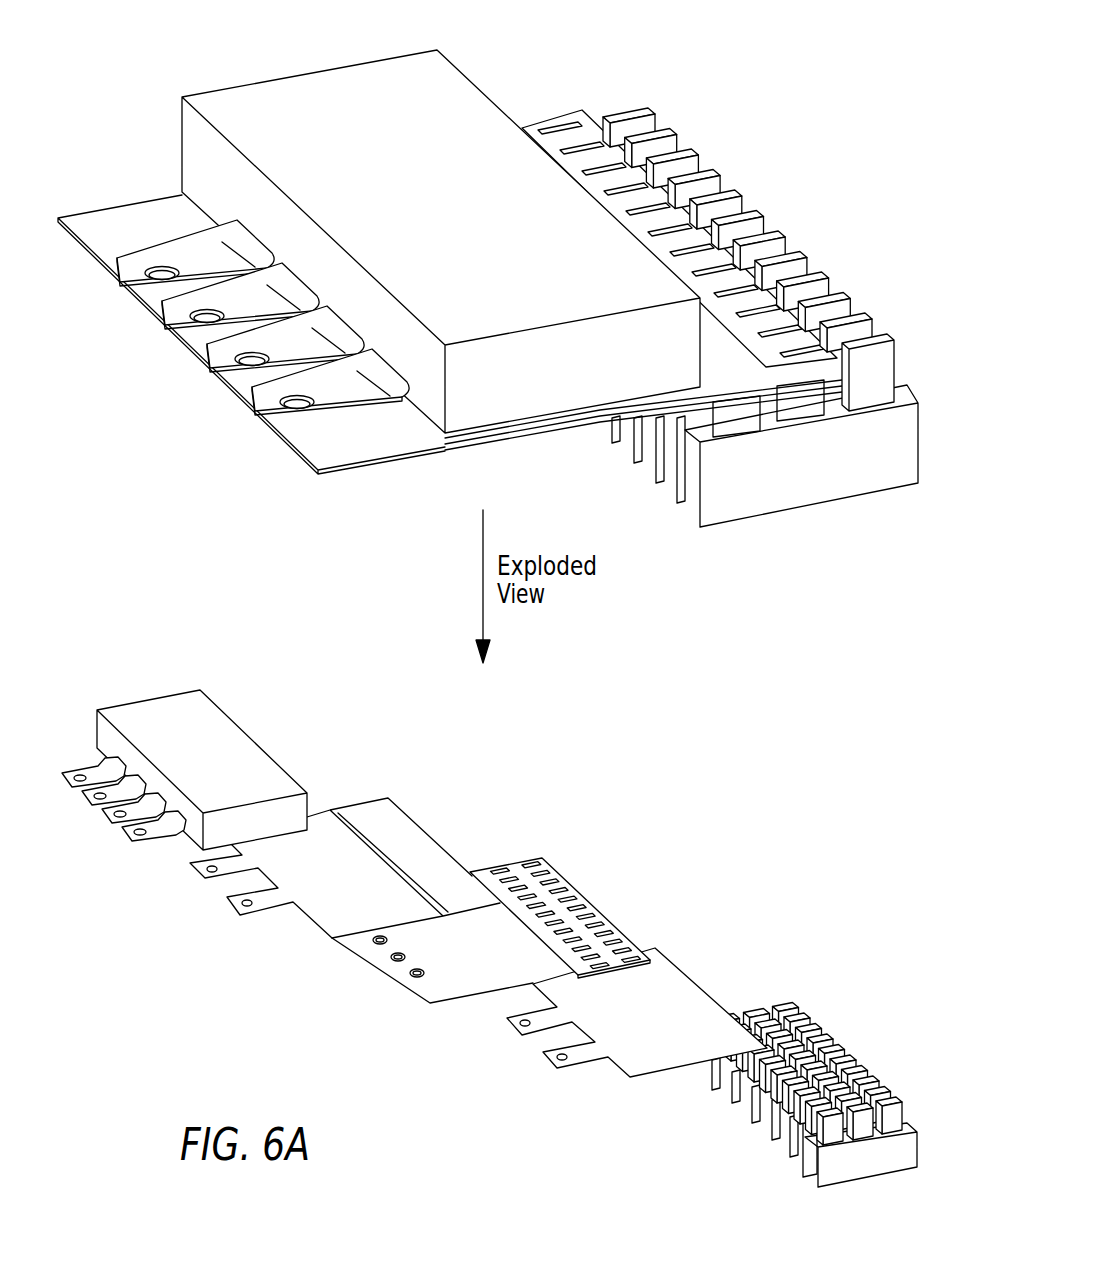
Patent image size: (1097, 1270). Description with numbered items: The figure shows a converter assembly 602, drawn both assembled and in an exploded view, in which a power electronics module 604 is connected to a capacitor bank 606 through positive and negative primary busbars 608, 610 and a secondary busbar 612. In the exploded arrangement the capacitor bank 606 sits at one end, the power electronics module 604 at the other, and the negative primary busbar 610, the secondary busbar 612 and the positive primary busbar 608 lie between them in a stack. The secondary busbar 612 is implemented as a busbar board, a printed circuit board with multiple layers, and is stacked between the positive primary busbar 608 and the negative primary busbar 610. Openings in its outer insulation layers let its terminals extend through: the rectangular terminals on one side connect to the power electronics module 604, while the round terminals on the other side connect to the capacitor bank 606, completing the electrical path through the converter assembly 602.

The converter assembly 602 is at (716, 70).
The power electronics module 604 is at (787, 1012).
The capacitor bank 606 is at (157, 695).
The positive primary busbar 608 is at (650, 946).
The negative primary busbar 610 is at (362, 798).
The secondary busbar 612 is at (513, 860).